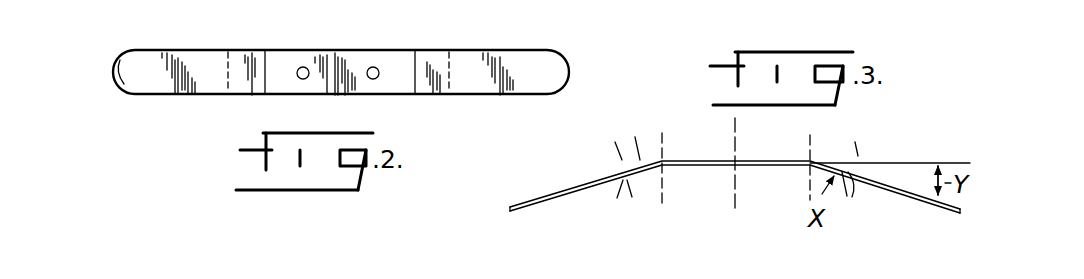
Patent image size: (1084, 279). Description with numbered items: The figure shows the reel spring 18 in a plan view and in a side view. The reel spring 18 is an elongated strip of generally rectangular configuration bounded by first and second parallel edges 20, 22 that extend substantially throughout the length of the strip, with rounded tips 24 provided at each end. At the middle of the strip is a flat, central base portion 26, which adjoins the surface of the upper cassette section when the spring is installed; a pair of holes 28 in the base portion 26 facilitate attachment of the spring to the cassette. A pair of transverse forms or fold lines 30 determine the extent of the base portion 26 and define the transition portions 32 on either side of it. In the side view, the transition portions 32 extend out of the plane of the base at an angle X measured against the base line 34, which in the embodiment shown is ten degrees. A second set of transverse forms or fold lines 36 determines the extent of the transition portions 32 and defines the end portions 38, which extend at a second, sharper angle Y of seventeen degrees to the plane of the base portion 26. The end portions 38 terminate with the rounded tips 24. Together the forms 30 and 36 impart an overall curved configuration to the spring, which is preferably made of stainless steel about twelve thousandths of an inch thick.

In FIG. 2, the reel spring 18 is at (520, 46).
In FIG. 3, the reel spring 18 is at (728, 176).
In FIG. 2, the first parallel edge 20 is at (342, 96).
In FIG. 2, the second parallel edge 22 is at (387, 50).
In FIG. 2, the rounded tips 24 is at (113, 72).
In FIG. 3, the rounded tips 24 is at (510, 211).
In FIG. 2, the flat central base portion 26 is at (327, 90).
In FIG. 3, the flat central base portion 26 is at (713, 162).
In FIG. 2, the holes 28 is at (304, 66).
In FIG. 2, the transverse forms or fold lines 30 is at (266, 70).
In FIG. 3, the transverse forms or fold lines 30 is at (662, 166).
In FIG. 2, the transition portions 32 is at (252, 95).
In FIG. 3, the transition portions 32 is at (838, 156).
In FIG. 3, the base line 34 is at (913, 160).
In FIG. 2, the second transverse forms or fold lines 36 is at (227, 64).
In FIG. 3, the second transverse forms or fold lines 36 is at (733, 200).
In FIG. 2, the end portions 38 is at (180, 97).
In FIG. 3, the end portions 38 is at (578, 182).